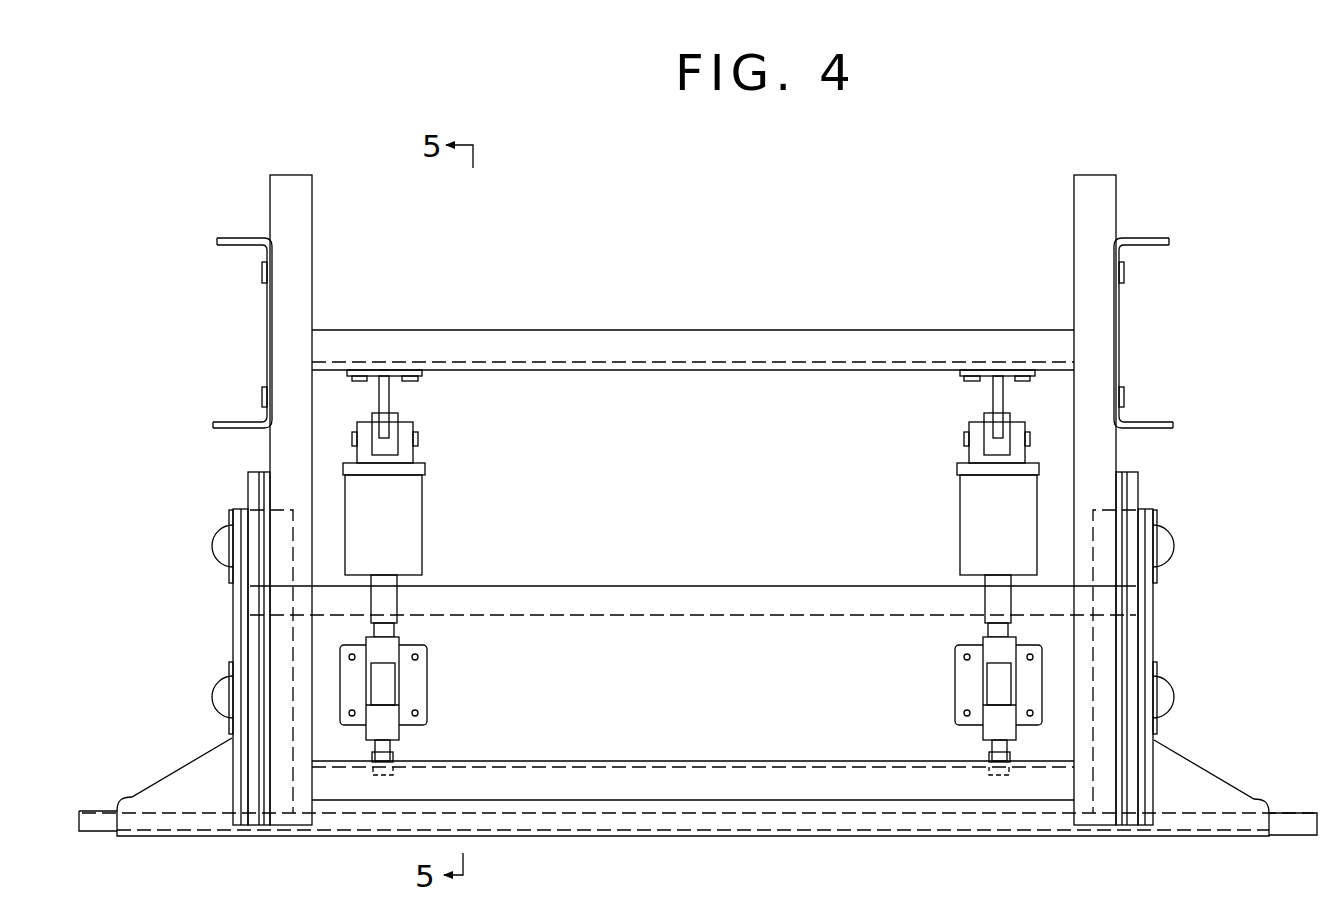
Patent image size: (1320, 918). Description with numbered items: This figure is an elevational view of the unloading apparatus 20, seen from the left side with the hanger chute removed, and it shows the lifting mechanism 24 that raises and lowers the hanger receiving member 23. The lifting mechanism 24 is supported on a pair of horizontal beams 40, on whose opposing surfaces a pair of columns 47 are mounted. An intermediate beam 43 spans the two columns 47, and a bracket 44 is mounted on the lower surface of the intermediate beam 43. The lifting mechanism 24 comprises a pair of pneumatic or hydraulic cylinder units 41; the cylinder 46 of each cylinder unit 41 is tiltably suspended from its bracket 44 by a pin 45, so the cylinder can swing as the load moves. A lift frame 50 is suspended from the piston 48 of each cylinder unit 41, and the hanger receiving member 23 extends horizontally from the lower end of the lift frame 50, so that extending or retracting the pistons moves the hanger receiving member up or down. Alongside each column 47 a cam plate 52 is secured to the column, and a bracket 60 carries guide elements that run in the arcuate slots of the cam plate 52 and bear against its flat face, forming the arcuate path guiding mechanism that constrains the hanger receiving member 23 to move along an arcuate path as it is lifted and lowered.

The unloading apparatus 20 is at (900, 328).
The hanger receiving member 23 is at (93, 808).
The lifting mechanism 24 is at (691, 594).
The horizontal beams 40 is at (232, 238).
The cylinder unit 41 is at (691, 518).
The intermediate beam 43 is at (710, 329).
The bracket 44 is at (390, 396).
The pin 45 is at (418, 440).
The cylinder 46 is at (424, 545).
The columns 47 is at (313, 249).
The piston 48 is at (397, 603).
The lift frame 50 is at (697, 585).
The cam plate 52 is at (258, 470).
The bracket 60 is at (233, 637).